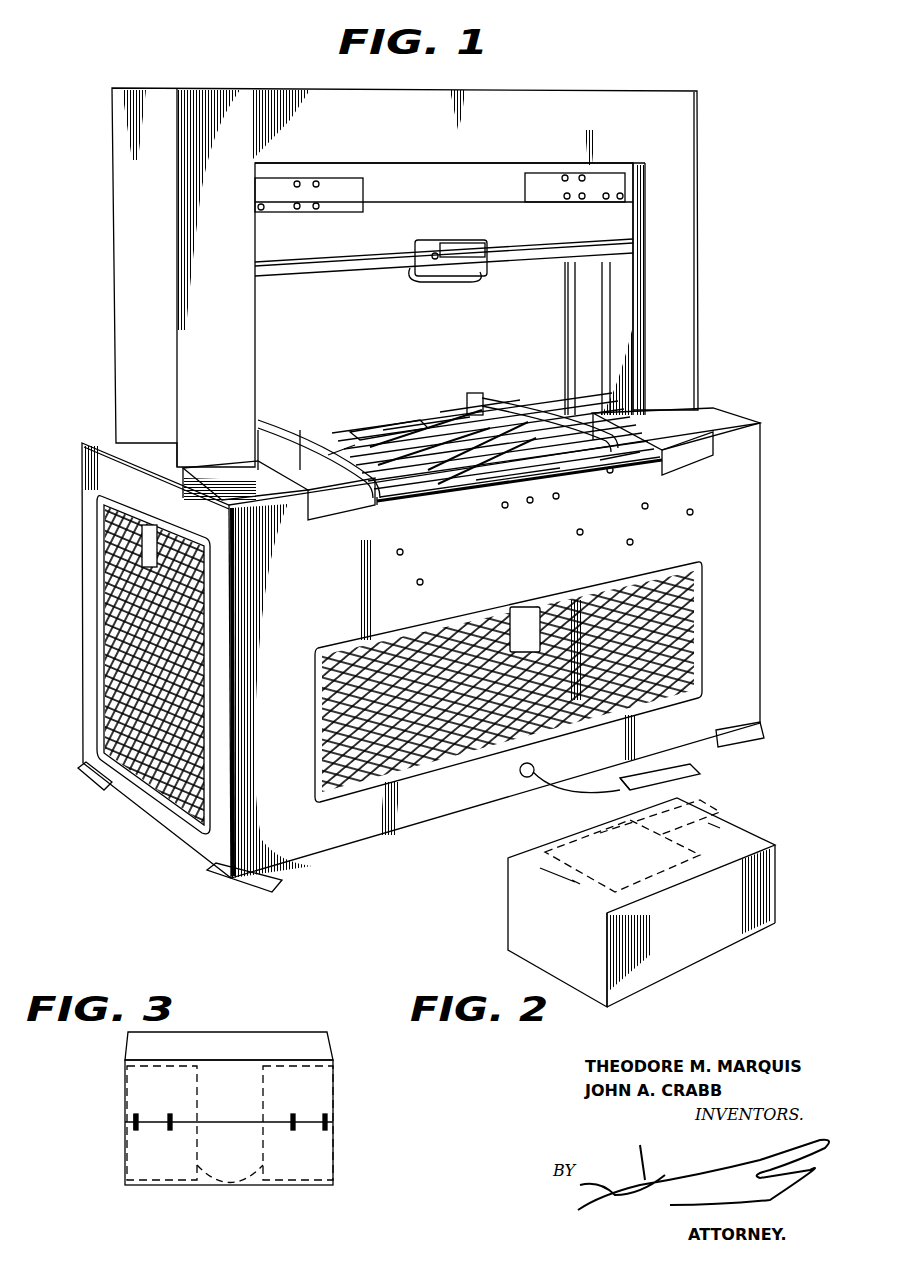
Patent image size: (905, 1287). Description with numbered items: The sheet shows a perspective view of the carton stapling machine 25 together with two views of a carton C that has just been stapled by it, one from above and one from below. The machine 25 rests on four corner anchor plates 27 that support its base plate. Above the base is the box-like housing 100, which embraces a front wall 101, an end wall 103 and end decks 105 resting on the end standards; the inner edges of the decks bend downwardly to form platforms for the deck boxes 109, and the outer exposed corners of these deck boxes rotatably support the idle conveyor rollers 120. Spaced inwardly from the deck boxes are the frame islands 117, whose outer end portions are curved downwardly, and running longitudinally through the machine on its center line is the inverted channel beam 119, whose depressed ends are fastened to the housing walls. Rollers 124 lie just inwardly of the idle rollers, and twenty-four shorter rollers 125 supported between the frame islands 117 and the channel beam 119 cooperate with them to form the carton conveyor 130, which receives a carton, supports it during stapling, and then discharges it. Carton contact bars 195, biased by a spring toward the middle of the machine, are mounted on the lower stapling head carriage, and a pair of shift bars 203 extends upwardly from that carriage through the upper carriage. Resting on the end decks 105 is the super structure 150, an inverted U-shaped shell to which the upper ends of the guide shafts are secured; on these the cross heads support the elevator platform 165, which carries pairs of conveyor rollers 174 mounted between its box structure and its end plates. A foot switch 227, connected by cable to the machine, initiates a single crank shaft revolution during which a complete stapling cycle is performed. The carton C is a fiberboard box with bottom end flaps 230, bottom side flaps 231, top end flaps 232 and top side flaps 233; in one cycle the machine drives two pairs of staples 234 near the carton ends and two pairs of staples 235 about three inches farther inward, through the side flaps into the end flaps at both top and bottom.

In FIG. 1, the carton stapling machine 25 is at (712, 190).
In FIG. 1, the super structure 150 is at (535, 118).
In FIG. 1, the elevator platform 165 is at (427, 228).
In FIG. 1, the conveyor rollers 174 is at (452, 272).
In FIG. 1, the shift bars 203 is at (595, 317).
In FIG. 1, the box-like housing 100 is at (762, 430).
In FIG. 1, the front wall 101 is at (742, 513).
In FIG. 1, the end wall 103 is at (105, 468).
In FIG. 1, the end decks 105 is at (246, 477).
In FIG. 1, the deck boxes 109 is at (324, 505).
In FIG. 1, the frame islands 117 is at (258, 430).
In FIG. 1, the inverted channel beam 119 is at (372, 430).
In FIG. 1, the idle conveyor rollers 120 is at (442, 410).
In FIG. 1, the rollers 124 is at (400, 412).
In FIG. 1, the shorter rollers 125 is at (432, 485).
In FIG. 1, the carton conveyor 130 is at (405, 408).
In FIG. 1, the carton contact bar 195 is at (300, 422).
In FIG. 1, the corner anchor plates 27 is at (92, 780).
In FIG. 1, the foot switch 227 is at (670, 780).
In FIG. 2, the carton C is at (520, 906).
In FIG. 3, the carton C is at (265, 1046).
In FIG. 2, the top end flaps 232 is at (690, 880).
In FIG. 2, the top side flaps 233 is at (590, 893).
In FIG. 2, the staples 234 is at (715, 827).
In FIG. 3, the staples 234 is at (140, 1128).
In FIG. 2, the staples 235 is at (650, 846).
In FIG. 3, the staples 235 is at (290, 1122).
In FIG. 3, the bottom side flaps 231 is at (122, 1100).
In FIG. 3, the bottom end flaps 230 is at (230, 1186).